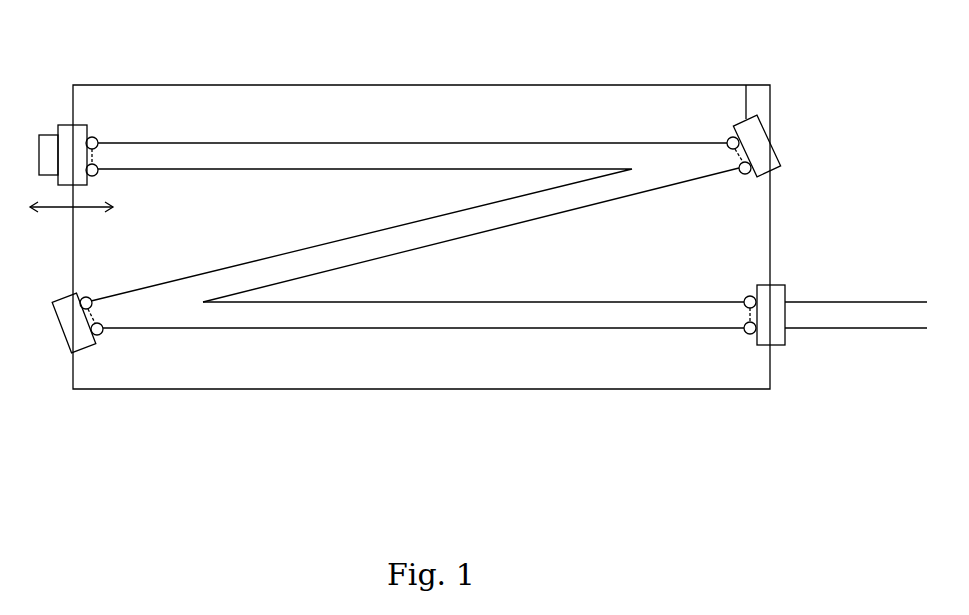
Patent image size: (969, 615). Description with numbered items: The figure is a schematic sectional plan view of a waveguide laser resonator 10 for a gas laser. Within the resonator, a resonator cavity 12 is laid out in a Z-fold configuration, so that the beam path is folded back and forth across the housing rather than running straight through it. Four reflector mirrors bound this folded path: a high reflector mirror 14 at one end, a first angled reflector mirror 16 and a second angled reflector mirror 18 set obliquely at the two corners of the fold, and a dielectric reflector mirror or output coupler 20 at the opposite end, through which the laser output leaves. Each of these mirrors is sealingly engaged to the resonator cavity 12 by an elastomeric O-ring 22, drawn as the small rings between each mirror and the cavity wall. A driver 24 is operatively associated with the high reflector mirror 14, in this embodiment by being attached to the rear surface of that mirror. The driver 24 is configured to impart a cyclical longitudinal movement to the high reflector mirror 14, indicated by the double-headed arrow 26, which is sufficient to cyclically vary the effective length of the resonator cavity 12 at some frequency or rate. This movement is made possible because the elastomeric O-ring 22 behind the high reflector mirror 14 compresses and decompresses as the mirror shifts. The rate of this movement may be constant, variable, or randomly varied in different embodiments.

The waveguide laser resonator 10 is at (703, 246).
The resonator cavity 12 is at (470, 155).
The high reflector mirror 14 is at (82, 135).
The first angled reflector mirror 16 is at (780, 155).
The second angled reflector mirror 18 is at (67, 322).
The dielectric reflector mirror or output coupler 20 is at (770, 333).
The elastomeric O-ring 22 is at (100, 138).
The driver 24 is at (50, 140).
The arrow 26 is at (65, 212).